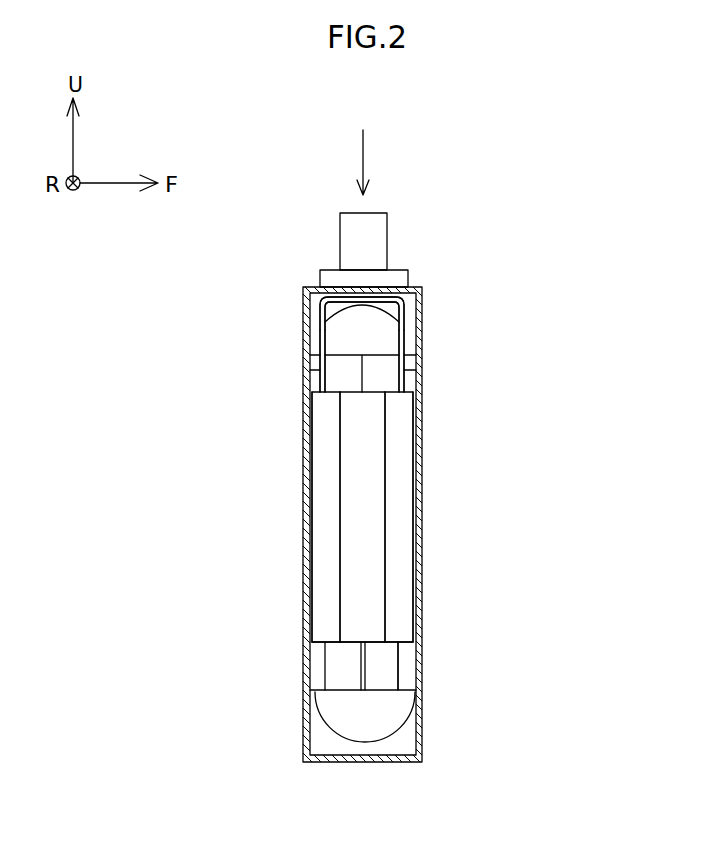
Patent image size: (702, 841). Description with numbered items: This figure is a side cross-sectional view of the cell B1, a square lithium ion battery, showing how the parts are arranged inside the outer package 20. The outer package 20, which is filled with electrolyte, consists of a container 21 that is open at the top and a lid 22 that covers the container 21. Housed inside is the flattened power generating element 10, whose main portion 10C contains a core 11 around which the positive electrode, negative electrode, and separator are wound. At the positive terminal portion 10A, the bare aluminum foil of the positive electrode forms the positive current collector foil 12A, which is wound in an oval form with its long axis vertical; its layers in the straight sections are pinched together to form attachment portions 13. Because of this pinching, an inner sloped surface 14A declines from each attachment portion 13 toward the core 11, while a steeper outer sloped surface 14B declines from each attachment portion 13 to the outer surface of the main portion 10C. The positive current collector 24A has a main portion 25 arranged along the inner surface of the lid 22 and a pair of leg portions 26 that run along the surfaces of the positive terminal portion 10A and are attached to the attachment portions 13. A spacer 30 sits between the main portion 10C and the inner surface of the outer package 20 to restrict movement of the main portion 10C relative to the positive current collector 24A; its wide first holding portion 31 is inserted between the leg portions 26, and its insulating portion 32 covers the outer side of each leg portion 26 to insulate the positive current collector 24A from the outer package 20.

The power generating element 10 is at (357, 717).
The positive terminal portion 10A is at (382, 678).
The main portion 10C is at (378, 725).
The core 11 is at (357, 672).
The positive current collector foil 12A is at (380, 370).
The attachment portion 13 is at (312, 368).
The inner sloped surface 14A is at (378, 652).
The outer sloped surface 14B is at (318, 653).
The outer package 20 is at (208, 262).
The container 21 is at (318, 338).
The lid 22 is at (312, 290).
The positive current collector 24A is at (508, 262).
The main portion 25 is at (363, 300).
The leg portions 26 is at (408, 340).
The spacer 30 is at (363, 463).
The first holding portion 31 is at (363, 490).
The insulating portion 32 is at (398, 583).
The cell B1 is at (362, 149).